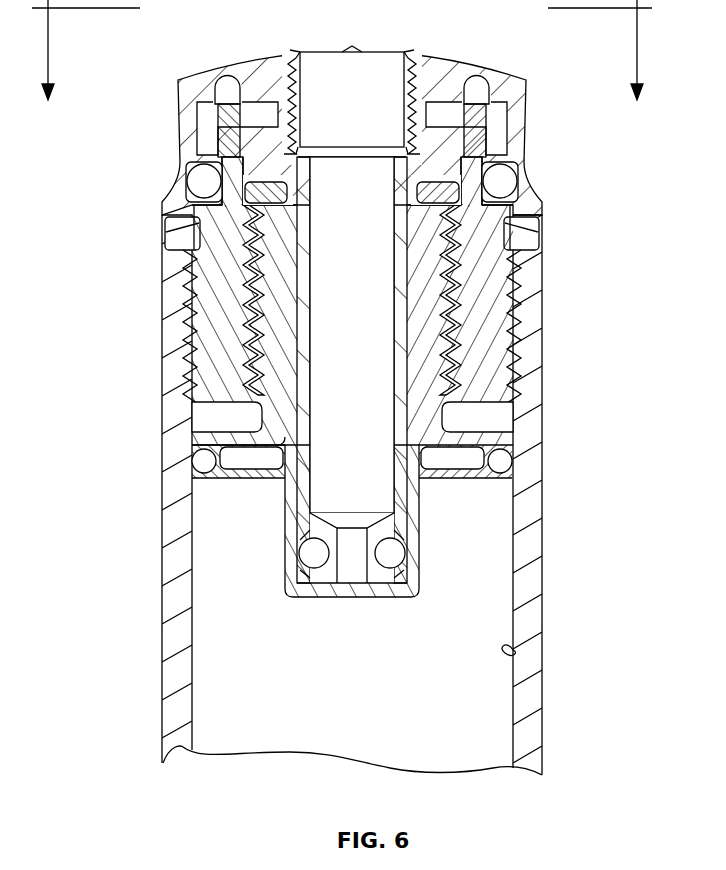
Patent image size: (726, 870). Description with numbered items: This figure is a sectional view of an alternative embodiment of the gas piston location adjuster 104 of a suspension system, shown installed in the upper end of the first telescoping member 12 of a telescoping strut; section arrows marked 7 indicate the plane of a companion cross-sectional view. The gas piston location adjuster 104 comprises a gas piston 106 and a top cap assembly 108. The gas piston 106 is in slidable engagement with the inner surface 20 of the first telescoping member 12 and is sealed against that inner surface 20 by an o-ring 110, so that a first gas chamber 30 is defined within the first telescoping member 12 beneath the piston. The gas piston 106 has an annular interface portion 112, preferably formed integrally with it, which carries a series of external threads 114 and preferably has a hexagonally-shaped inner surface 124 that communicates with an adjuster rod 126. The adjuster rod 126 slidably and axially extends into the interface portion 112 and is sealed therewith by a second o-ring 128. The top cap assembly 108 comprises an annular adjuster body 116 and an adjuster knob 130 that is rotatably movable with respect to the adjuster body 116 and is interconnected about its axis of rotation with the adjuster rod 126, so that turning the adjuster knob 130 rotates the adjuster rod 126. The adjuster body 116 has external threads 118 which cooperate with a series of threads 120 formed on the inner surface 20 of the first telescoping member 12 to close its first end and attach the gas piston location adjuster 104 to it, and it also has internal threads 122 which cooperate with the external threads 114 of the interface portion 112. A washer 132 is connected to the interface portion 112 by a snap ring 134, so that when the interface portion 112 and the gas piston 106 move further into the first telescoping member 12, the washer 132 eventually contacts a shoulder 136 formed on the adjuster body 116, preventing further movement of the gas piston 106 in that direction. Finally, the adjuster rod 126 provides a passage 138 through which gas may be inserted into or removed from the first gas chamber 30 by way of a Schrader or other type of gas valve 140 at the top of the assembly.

The section line 7- 7 is at (342, 64).
The first telescoping member 12 is at (390, 495).
The inner surface 20 is at (513, 650).
The first gas chamber 30 is at (500, 745).
The gas piston location adjuster 104 is at (363, 301).
The gas piston 106 is at (381, 377).
The top cap assembly 108 is at (331, 113).
The o-ring 110 is at (514, 472).
The interface portion 112 is at (497, 421).
The external threads 114 is at (520, 283).
The adjuster body 116 is at (163, 205).
The external threads 118 is at (190, 274).
The threads 120 is at (195, 338).
The internal threads 122 is at (197, 376).
The inner surface 124 is at (505, 243).
The adjuster rod 126 is at (403, 517).
The o-ring 128 is at (403, 551).
The adjuster knob 130 is at (460, 52).
The washer 132 is at (518, 182).
The snap ring 134 is at (430, 187).
The shoulder 136 is at (505, 326).
The passage 138 is at (325, 497).
The gas valve 140 is at (348, 50).